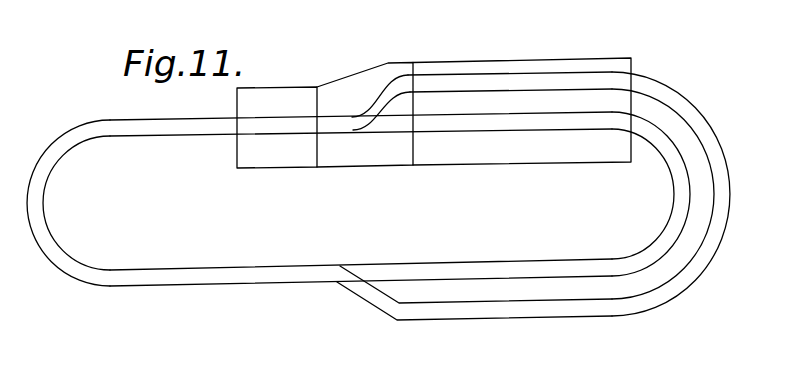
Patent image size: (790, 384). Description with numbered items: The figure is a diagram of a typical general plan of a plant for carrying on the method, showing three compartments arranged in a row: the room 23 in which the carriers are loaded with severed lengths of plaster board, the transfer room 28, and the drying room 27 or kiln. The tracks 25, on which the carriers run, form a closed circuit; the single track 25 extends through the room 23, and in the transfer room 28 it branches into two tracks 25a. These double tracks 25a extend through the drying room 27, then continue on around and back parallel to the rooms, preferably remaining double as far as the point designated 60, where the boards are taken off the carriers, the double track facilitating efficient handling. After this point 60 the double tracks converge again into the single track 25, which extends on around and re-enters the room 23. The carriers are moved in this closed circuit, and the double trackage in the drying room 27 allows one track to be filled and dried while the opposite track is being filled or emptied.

The room 23 is at (277, 127).
The tracks 25 is at (175, 121).
The double tracks 25a is at (453, 73).
The drying room 27 is at (522, 111).
The transfer room 28 is at (365, 115).
The point 60 is at (474, 293).